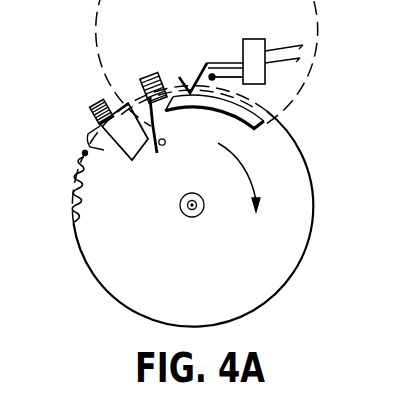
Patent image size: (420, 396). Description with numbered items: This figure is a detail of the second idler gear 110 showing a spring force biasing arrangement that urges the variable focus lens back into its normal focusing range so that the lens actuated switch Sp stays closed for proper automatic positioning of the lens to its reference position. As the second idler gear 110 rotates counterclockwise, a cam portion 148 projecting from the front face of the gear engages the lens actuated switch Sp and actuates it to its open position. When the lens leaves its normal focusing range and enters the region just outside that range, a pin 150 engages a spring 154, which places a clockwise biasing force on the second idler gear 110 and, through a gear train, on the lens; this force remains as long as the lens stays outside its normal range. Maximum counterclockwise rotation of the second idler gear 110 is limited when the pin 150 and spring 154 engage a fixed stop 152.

The second idler gear 110 is at (287, 188).
The cam portion 148 is at (256, 126).
The pin 150 is at (165, 143).
The fixed stop 152 is at (122, 133).
The spring 154 is at (138, 105).
The lens actuated switch Sp is at (218, 62).